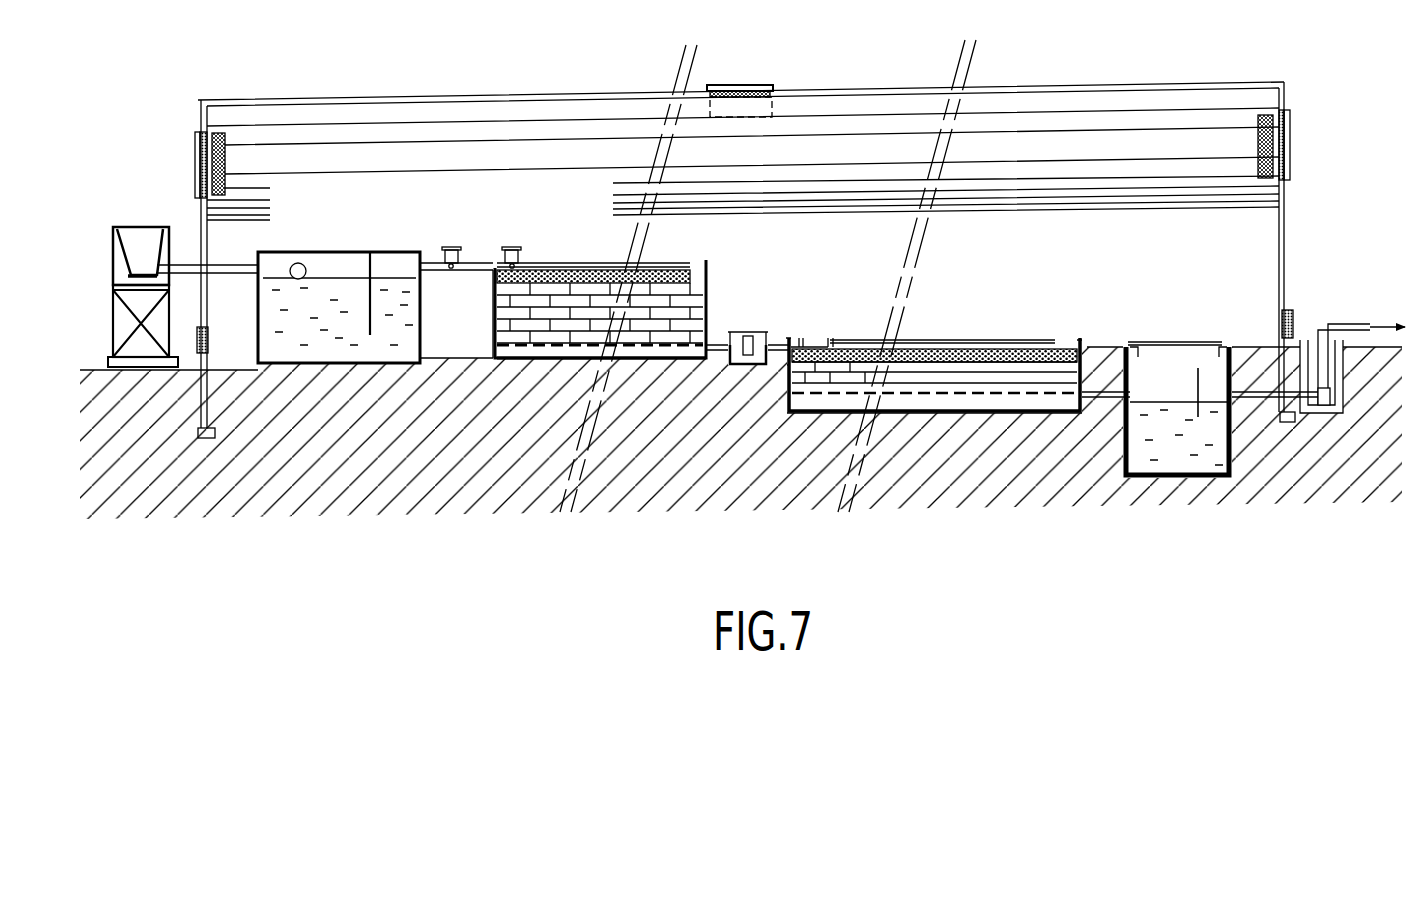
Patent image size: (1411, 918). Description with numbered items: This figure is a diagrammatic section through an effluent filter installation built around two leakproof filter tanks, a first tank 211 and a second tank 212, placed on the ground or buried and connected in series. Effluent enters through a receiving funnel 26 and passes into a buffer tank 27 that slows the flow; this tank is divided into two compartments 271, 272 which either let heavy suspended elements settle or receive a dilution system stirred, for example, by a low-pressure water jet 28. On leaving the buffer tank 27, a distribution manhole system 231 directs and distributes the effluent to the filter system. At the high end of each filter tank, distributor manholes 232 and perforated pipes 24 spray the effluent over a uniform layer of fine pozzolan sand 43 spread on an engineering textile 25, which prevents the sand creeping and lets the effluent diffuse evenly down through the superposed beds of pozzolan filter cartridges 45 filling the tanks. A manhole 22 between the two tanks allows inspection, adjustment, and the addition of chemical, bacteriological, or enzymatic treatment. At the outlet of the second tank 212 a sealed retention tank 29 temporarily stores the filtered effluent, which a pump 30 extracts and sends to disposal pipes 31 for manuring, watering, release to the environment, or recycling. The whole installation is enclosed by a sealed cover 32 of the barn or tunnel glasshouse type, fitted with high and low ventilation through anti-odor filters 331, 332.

The sealed cover 32 is at (342, 144).
The anti-odor filter 331 is at (752, 82).
The anti-odor filter 332 is at (197, 345).
The effluent receiving funnel 26 is at (141, 228).
The tank for slowing down the flow 27 is at (339, 371).
The first compartment 271 is at (336, 310).
The second compartment 272 is at (392, 305).
The jet of water 28 is at (297, 254).
The first leakproof tank 211 is at (488, 325).
The second leakproof tank 212 is at (782, 386).
The distribution manhole system 231 is at (449, 246).
The distributor manhole 232 is at (512, 246).
The perforated pipe 24 is at (575, 265).
The pozzolan sand 43 is at (661, 269).
The filter cartridge 45 is at (691, 301).
The manhole 22 is at (749, 324).
The engineering textile 25 is at (860, 348).
The sealed retention tank 29 is at (1170, 340).
The pump 30 is at (1325, 418).
The disposal pipes 31 is at (1378, 323).